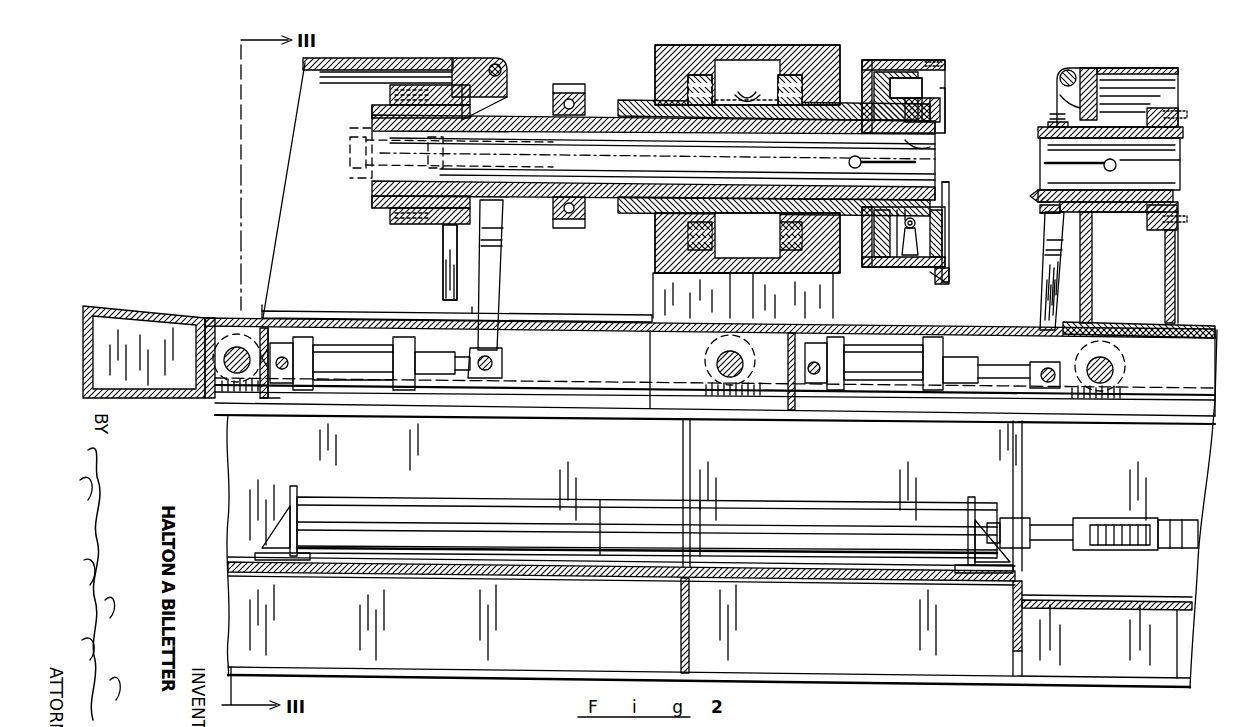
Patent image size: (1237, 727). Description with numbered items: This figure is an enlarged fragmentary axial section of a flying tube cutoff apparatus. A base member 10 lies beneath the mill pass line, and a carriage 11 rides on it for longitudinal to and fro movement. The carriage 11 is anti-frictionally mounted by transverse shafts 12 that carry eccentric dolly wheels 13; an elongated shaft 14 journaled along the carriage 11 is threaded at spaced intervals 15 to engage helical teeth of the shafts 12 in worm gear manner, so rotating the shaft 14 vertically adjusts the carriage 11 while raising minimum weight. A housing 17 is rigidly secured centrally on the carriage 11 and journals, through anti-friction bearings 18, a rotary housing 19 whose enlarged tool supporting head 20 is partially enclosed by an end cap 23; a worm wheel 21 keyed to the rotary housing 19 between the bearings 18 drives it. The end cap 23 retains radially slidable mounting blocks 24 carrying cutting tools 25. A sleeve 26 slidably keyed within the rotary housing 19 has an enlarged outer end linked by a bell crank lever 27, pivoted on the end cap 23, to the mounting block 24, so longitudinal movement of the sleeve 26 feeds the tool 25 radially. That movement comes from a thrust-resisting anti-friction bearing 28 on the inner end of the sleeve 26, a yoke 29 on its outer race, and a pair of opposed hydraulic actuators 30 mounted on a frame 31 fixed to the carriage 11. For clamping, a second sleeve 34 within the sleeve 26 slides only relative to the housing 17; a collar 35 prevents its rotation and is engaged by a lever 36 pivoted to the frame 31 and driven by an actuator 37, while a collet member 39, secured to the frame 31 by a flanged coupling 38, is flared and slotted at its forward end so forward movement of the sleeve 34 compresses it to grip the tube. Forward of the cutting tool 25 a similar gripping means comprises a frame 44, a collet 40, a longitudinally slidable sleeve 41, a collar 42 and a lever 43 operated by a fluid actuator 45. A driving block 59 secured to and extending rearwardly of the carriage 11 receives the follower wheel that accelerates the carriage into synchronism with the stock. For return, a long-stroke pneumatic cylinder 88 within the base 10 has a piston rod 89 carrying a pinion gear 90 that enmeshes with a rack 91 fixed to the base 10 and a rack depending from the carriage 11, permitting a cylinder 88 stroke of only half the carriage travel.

The base member 10 is at (875, 662).
The carriage 11 is at (562, 318).
The shafts 12 is at (715, 365).
The dolly wheels 13 is at (705, 350).
The elongated shaft 14 is at (1145, 385).
The threaded intervals 15 is at (716, 397).
The housing 17 is at (672, 44).
The anti-friction bearings 18 is at (697, 75).
The rotary housing 19 is at (630, 100).
The tool supporting head 20 is at (898, 60).
The worm wheel 21 is at (752, 88).
The end cap 23 is at (940, 88).
The mounting block 24 is at (942, 272).
The cutting tool 25 is at (950, 198).
The sleeve 26 is at (622, 213).
The bell crank lever 27 is at (902, 272).
The thrust-resisting anti-friction bearing 28 is at (576, 95).
The yoke 29 is at (556, 93).
The hydraulic actuators 30 is at (340, 192).
The frame 31 is at (300, 260).
The second sleeve 34 is at (518, 190).
The collar 35 is at (500, 230).
The lever 36 is at (498, 292).
The actuator 37 is at (390, 385).
The flanged coupling 38 is at (385, 102).
The collet member 39 is at (930, 138).
The collet 40 is at (1165, 195).
The longitudinally slidable sleeve 41 is at (1038, 198).
The collar 42 is at (1050, 212).
The lever 43 is at (1045, 288).
The frame 44 is at (1090, 305).
The fluid actuator 45 is at (880, 395).
The driving block 59 is at (160, 330).
The pneumatic cylinder 88 is at (482, 498).
The piston rod 89 is at (1050, 518).
The pinion gear 90 is at (1165, 518).
The rack 91 is at (1195, 520).